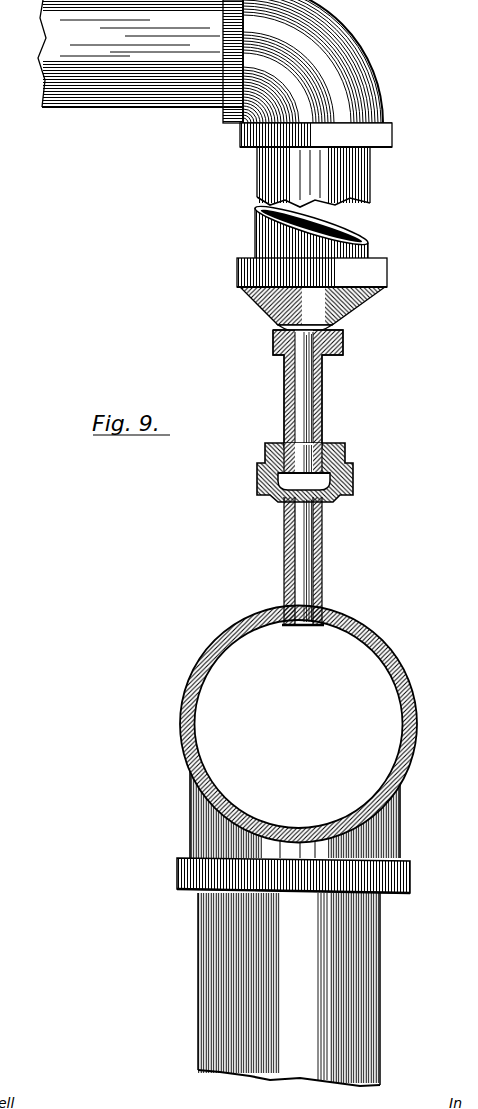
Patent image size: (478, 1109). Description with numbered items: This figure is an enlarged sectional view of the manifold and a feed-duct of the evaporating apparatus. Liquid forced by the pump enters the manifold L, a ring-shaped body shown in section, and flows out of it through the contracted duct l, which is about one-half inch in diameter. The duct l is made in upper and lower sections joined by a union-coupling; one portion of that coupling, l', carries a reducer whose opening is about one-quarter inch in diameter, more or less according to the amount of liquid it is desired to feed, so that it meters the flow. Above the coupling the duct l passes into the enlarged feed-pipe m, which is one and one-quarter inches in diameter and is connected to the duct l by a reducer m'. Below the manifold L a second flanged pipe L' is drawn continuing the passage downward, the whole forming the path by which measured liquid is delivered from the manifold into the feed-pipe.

The feed-pipe m is at (215, 103).
The reducer m' is at (312, 266).
The contracted duct l is at (308, 477).
The union-coupling portion l' is at (305, 472).
The manifold L is at (305, 724).
The lower pipe with flange L' is at (293, 893).